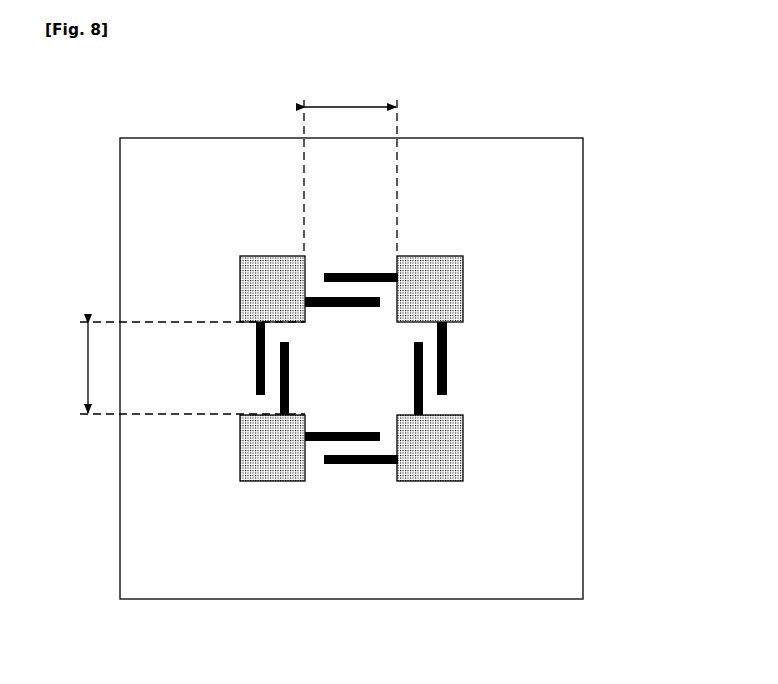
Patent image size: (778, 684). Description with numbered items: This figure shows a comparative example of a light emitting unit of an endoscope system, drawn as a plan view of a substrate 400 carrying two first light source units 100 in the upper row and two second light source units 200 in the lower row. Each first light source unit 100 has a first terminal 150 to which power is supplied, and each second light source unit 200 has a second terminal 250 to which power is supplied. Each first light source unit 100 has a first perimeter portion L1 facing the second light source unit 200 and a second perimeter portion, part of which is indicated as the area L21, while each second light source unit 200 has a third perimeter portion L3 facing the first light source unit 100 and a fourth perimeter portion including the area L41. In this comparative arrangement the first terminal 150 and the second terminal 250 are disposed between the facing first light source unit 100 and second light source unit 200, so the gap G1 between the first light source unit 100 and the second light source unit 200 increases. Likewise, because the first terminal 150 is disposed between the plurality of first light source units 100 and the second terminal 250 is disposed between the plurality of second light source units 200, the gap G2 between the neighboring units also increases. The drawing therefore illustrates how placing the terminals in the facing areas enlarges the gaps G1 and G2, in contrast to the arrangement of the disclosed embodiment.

The first light source unit 100 is at (241, 257).
The first terminal 150 is at (317, 297).
The second light source unit 200 is at (240, 466).
The second terminal 250 is at (283, 408).
The substrate 400 is at (527, 138).
The first perimeter portion L1 is at (258, 343).
The second perimeter portion area L21 is at (306, 266).
The third perimeter portion L3 is at (458, 415).
The fourth perimeter portion area L41 is at (447, 376).
The gap between first and second light source units G1 is at (179, 368).
The gap between like light source units G2 is at (350, 168).